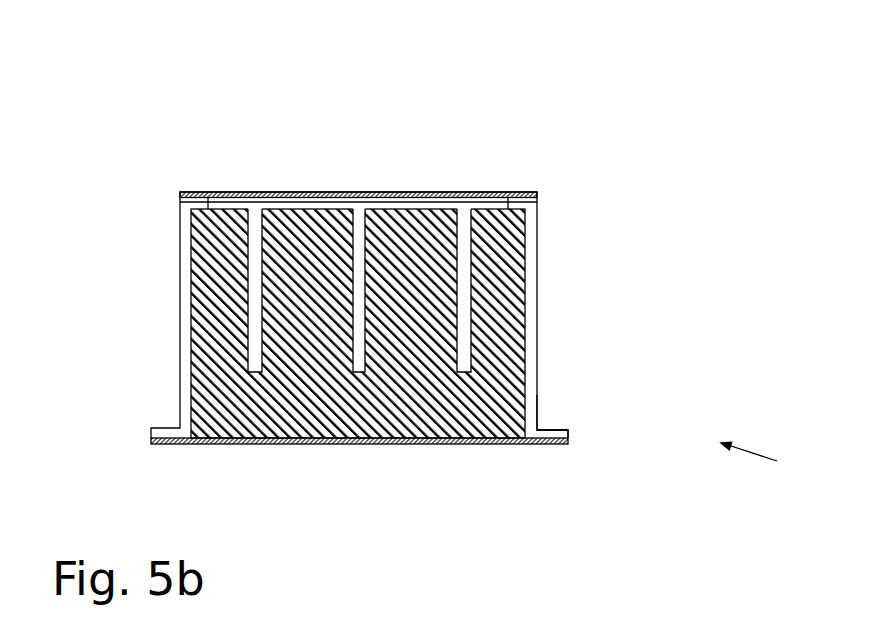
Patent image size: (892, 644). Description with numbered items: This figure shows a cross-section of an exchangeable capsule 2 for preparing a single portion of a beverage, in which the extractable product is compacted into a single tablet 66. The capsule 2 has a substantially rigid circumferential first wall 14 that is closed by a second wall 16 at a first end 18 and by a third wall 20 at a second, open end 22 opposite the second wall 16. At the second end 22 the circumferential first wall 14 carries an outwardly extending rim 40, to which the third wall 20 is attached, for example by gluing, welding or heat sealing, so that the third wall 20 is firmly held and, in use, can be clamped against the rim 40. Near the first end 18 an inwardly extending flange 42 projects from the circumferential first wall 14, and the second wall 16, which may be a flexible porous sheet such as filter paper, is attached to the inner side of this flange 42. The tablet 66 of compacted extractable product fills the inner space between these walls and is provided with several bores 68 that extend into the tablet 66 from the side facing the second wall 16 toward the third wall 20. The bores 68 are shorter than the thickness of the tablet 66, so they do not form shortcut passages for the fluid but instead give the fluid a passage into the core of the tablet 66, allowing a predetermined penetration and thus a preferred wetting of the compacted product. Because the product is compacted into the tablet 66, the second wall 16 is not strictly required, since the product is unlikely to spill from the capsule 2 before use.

The exchangeable capsule 2 is at (761, 460).
The circumferential first wall 14 is at (529, 324).
The second wall 16 is at (482, 193).
The first end 18 is at (529, 218).
The third wall 20 is at (490, 443).
The second end 22 is at (528, 420).
The outwardly extending rim 40 is at (570, 436).
The inwardly extending flange 42 is at (527, 206).
The tablet 66 is at (205, 325).
The bores 68 is at (361, 215).